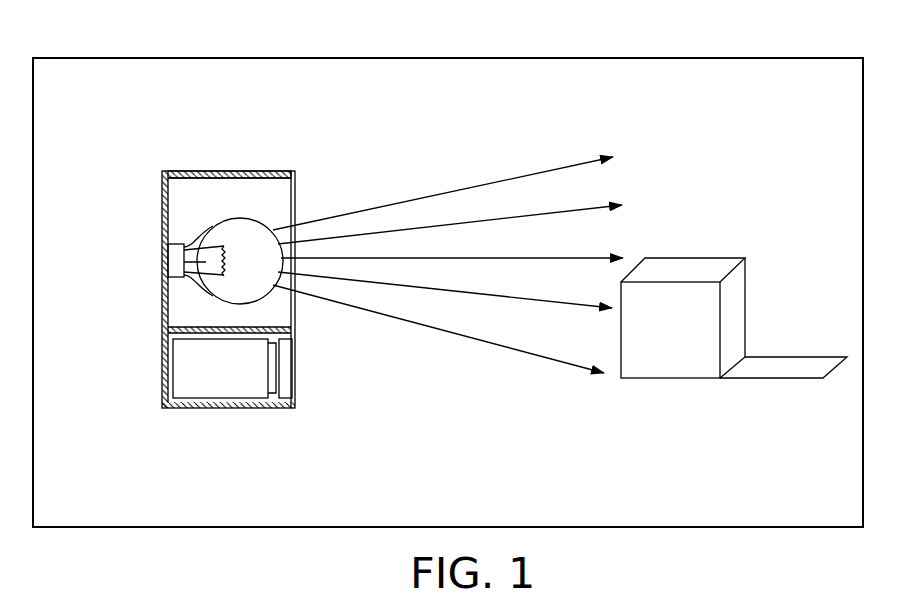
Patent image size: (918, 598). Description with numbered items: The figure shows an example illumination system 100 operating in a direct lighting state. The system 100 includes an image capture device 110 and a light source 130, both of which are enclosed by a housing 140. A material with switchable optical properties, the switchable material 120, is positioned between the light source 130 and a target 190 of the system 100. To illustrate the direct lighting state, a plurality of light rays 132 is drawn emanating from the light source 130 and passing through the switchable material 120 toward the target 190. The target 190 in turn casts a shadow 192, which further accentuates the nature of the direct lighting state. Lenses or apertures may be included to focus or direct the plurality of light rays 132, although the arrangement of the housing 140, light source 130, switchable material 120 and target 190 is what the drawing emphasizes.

The illumination system 100 is at (448, 58).
The image capture device 110 is at (221, 380).
The material with switchable optical properties 120 is at (296, 189).
The light source 130 is at (184, 262).
The plurality of light rays 132 is at (443, 192).
The housing 140 is at (228, 171).
The target 190 is at (695, 265).
The shadow 192 is at (793, 357).